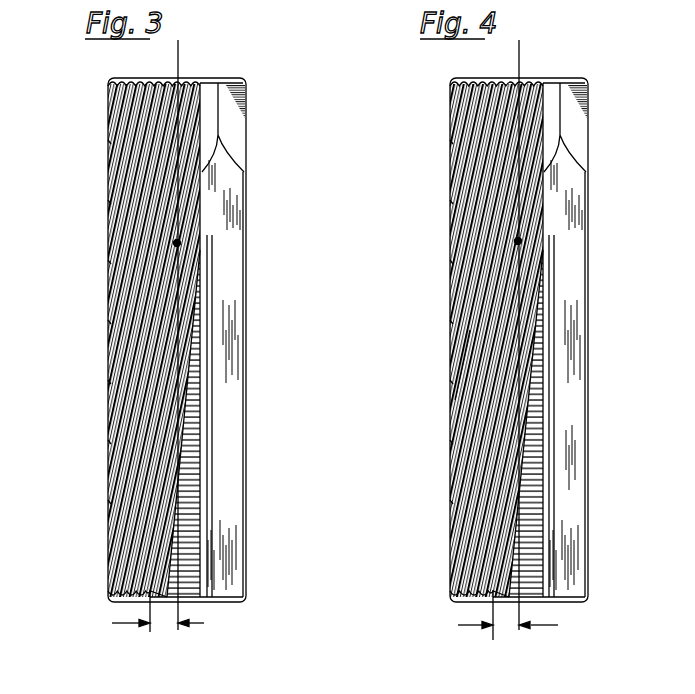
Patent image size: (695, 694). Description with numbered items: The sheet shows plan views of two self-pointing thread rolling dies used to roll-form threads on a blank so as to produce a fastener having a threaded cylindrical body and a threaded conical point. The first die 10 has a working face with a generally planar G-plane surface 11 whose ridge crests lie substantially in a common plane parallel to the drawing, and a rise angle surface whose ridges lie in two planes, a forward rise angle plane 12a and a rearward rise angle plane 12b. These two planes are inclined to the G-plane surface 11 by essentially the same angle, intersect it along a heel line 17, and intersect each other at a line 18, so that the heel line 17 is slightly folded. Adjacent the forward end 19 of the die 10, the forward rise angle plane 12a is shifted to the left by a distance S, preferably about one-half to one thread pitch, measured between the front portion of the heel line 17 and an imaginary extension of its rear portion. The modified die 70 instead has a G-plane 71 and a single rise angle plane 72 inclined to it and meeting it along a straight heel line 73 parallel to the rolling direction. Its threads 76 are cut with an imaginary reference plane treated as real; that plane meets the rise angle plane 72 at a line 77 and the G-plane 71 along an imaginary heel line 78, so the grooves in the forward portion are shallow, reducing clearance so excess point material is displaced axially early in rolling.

In FIG. 3, the self-pointing thread rolling die 10 is at (272, 183).
In FIG. 3, the G-plane surface 11 is at (143, 231).
In FIG. 3, the forward rise angle plane 12a is at (182, 302).
In FIG. 4, the forward rise angle plane 12a is at (525, 300).
In FIG. 3, the rearward rise angle plane 12b is at (190, 222).
In FIG. 3, the heel line 17 is at (178, 61).
In FIG. 3, the line 18 is at (178, 245).
In FIG. 3, the forward end 19 is at (212, 603).
In FIG. 4, the modified die 70 is at (606, 134).
In FIG. 4, the G-plane 71 is at (480, 238).
In FIG. 4, the rise angle plane 72 is at (525, 274).
In FIG. 4, the heel line 73 is at (520, 60).
In FIG. 4, the threads 76 is at (488, 358).
In FIG. 4, the line 77 is at (521, 240).
In FIG. 4, the imaginary heel line 78 is at (493, 606).